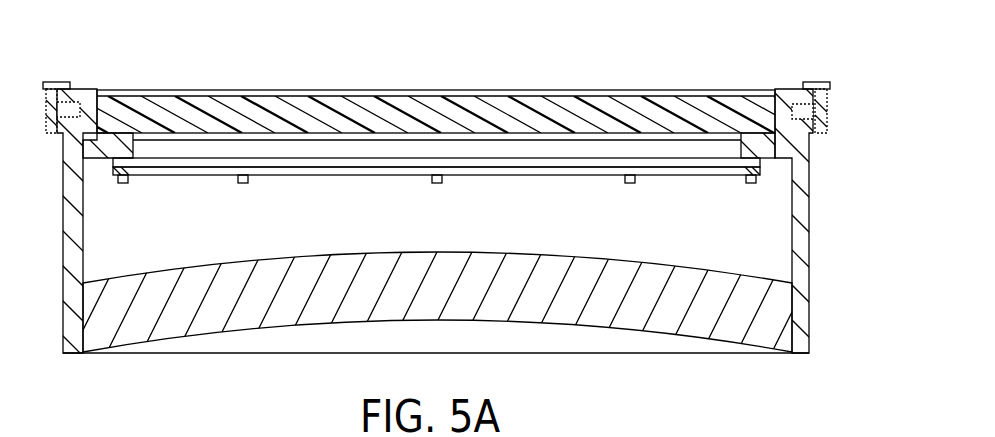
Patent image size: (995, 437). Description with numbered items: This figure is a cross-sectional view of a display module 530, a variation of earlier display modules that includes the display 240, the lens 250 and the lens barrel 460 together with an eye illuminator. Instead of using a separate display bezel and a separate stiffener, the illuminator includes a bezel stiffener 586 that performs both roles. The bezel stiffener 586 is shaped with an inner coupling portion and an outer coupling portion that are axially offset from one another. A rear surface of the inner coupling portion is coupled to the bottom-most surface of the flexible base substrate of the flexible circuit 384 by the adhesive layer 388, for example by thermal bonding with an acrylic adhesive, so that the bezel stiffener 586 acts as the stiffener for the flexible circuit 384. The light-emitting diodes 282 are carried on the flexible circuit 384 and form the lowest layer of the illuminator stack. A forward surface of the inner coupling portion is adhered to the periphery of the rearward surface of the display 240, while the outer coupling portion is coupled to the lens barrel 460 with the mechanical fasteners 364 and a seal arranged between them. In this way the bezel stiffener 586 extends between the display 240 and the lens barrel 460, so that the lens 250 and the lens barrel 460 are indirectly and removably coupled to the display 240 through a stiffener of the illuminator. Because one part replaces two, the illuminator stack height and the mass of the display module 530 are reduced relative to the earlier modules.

The display 240 is at (648, 108).
The lens 250 is at (757, 279).
The light-emitting diodes 282 is at (758, 173).
The mechanical fasteners 364 is at (62, 82).
The flexible circuit 384 is at (760, 163).
The adhesive layer 388 is at (790, 159).
The lens barrel 460 is at (800, 318).
The display module 530 is at (792, 52).
The bezel stiffener 586 is at (777, 143).